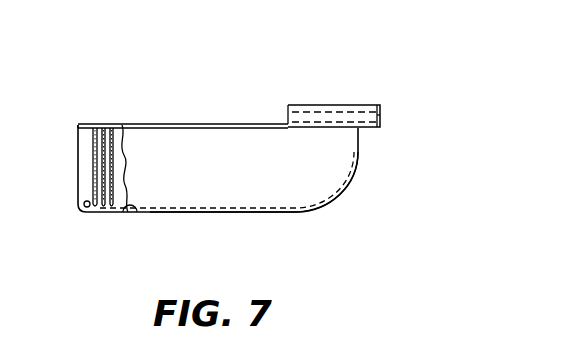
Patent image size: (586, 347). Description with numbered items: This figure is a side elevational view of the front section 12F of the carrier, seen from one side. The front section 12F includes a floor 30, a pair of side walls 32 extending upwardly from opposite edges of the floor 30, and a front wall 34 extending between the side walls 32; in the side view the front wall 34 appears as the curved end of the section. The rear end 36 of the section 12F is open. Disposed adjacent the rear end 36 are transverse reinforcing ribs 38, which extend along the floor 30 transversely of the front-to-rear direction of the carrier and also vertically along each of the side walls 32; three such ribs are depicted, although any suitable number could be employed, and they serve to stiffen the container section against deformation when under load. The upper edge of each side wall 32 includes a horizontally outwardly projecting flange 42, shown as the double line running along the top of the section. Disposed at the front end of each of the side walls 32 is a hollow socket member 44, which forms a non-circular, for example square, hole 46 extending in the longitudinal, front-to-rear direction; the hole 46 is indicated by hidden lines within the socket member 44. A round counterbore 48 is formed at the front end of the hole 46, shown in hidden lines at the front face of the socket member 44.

The front section 12F is at (213, 124).
The floor 30 is at (123, 203).
The side walls 32 is at (257, 203).
The front wall 34 is at (330, 197).
The rear end 36 is at (82, 147).
The transverse reinforcing ribs 38 is at (117, 142).
The flange 42 is at (277, 123).
The hollow socket member 44 is at (307, 105).
The hole 46 is at (322, 112).
The round counterbore 48 is at (382, 112).